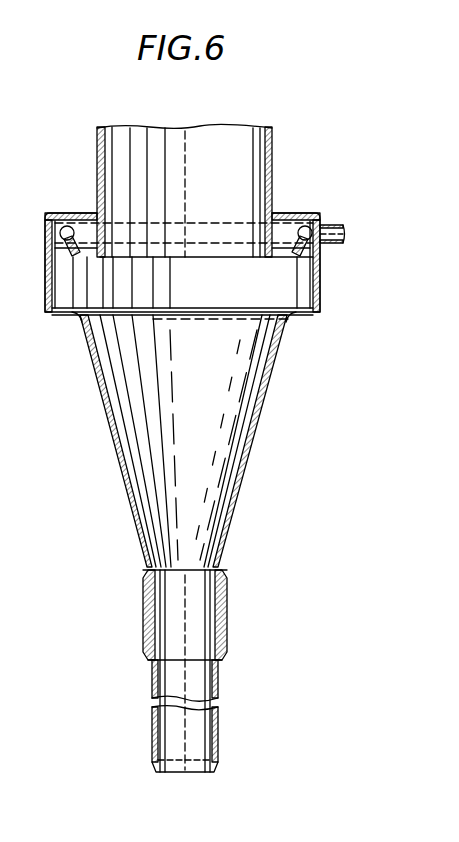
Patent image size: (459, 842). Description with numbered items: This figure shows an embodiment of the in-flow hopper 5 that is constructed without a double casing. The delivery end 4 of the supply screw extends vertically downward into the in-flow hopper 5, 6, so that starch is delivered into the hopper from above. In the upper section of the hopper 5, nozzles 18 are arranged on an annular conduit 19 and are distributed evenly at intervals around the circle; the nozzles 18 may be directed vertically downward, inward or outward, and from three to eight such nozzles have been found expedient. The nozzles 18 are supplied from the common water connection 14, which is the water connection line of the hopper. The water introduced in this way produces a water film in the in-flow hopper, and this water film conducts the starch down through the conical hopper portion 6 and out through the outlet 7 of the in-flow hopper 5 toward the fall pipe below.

The delivery end 4 is at (258, 163).
The in-flow hopper 5 is at (102, 432).
The in-flow hopper 6 is at (245, 427).
The outlet 7 is at (202, 626).
The water connection line 14 is at (333, 245).
The nozzles 18 is at (62, 248).
The annular conduit 19 is at (71, 225).